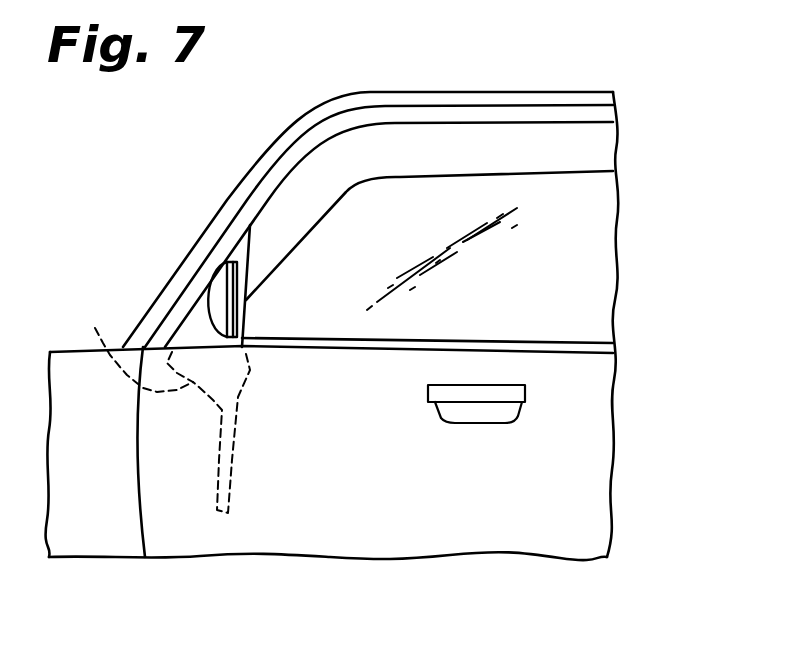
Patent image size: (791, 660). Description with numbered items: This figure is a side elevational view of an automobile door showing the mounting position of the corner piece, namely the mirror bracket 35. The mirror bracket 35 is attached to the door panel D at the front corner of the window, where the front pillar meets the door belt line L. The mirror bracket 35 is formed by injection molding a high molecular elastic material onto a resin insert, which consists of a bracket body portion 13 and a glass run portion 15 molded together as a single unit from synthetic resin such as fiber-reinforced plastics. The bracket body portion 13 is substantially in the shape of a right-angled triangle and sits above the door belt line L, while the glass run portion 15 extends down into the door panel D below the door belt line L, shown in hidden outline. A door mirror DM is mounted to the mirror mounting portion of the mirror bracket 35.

The mirror bracket 35 is at (77, 259).
The bracket body portion 13 is at (188, 326).
The glass run portion 15 is at (166, 409).
The door mirror DM is at (209, 290).
The door belt line L is at (492, 342).
The door panel D is at (338, 542).